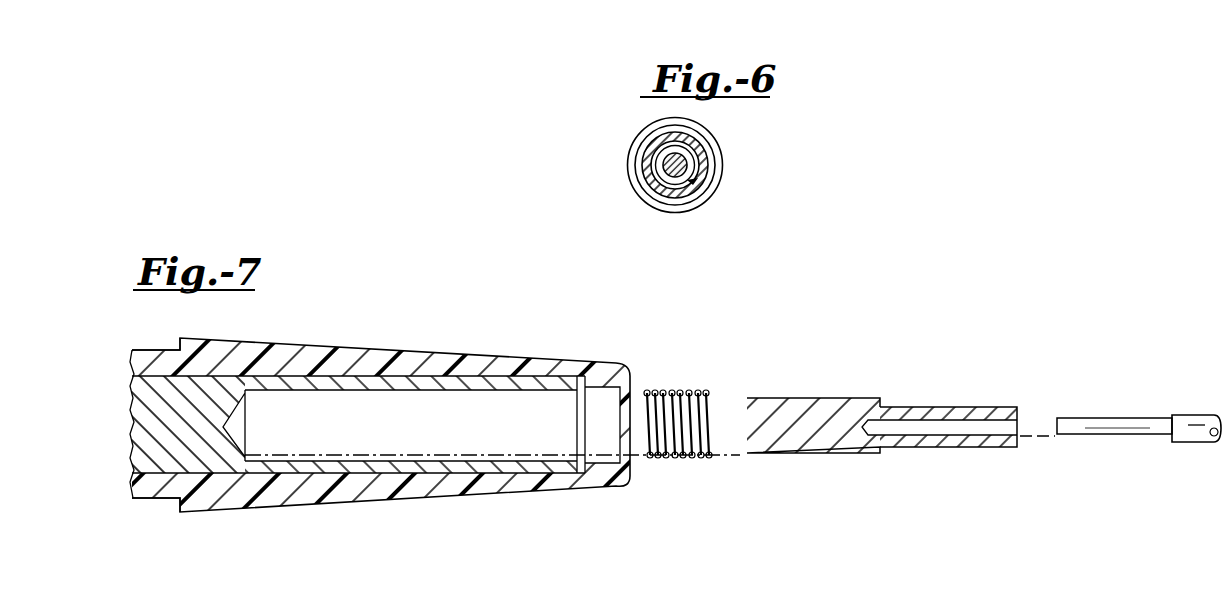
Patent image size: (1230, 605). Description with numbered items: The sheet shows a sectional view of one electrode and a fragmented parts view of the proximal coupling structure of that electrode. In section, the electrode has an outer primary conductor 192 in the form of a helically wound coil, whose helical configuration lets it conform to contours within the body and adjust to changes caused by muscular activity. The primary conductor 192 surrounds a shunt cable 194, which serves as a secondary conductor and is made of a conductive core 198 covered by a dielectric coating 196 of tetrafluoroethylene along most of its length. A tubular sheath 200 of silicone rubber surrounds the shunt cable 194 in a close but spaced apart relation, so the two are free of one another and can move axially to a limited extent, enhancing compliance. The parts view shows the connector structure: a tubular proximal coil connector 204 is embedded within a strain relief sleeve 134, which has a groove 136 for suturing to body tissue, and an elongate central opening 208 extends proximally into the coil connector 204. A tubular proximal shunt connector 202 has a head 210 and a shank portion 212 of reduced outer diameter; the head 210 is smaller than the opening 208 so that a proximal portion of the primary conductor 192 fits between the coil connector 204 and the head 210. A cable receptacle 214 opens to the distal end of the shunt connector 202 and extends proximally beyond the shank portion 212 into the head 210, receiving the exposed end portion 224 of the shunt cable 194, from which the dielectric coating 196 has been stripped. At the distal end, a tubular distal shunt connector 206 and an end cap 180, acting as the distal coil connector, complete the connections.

In FIG. 7, the strain relief sleeve 134 is at (345, 352).
In FIG. 7, the groove 136 is at (147, 352).
In FIG. 6, the end cap 180 is at (723, 182).
In FIG. 6, the primary conductor 192 is at (658, 132).
In FIG. 7, the primary conductor 192 is at (681, 393).
In FIG. 6, the shunt cable 194 is at (690, 183).
In FIG. 7, the shunt cable 194 is at (1180, 410).
In FIG. 6, the dielectric coating 196 is at (672, 180).
In FIG. 7, the dielectric coating 196 is at (1178, 444).
In FIG. 6, the conductive core 198 is at (658, 182).
In FIG. 6, the tubular sheath 200 is at (643, 163).
In FIG. 7, the proximal shunt connector 202 is at (862, 388).
In FIG. 7, the proximal coil connector 204 is at (215, 475).
In FIG. 7, the distal shunt connector 206 is at (416, 600).
In FIG. 7, the central opening 208 is at (457, 390).
In FIG. 7, the head 210 is at (763, 398).
In FIG. 7, the shank portion 212 is at (938, 410).
In FIG. 7, the cable receptacle 214 is at (930, 427).
In FIG. 7, the exposed end portion 224 is at (1082, 420).